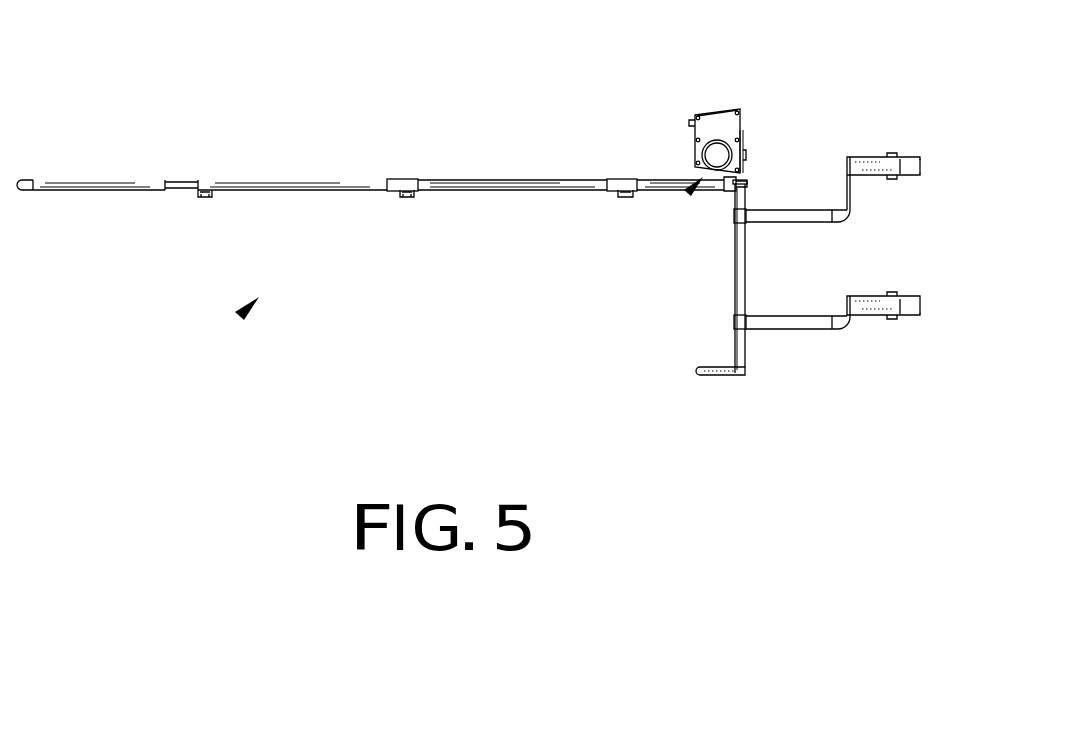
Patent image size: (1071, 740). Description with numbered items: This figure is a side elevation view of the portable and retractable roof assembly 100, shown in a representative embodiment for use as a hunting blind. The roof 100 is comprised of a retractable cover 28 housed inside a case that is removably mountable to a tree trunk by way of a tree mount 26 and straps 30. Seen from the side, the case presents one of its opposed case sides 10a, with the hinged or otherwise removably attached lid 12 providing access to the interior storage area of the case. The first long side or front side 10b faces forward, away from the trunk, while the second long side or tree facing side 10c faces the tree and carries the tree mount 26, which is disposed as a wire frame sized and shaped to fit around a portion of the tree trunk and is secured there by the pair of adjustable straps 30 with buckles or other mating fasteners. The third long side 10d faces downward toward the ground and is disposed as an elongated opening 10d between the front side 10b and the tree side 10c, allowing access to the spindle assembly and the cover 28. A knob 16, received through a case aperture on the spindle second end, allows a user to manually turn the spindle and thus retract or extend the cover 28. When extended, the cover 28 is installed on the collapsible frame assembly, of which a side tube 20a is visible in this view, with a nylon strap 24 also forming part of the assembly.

The portable and retractable roof assembly 100 is at (240, 316).
The case side 10a is at (723, 126).
The front side of case 10b is at (692, 141).
The tree facing side of case 10c is at (742, 137).
The elongated opening 10d is at (688, 193).
The lid 12 is at (713, 110).
The knob 16 is at (718, 168).
The side tube 20a is at (398, 191).
The nylon strap 24 is at (200, 196).
The tree mount 26 is at (743, 353).
The cover 28 is at (453, 181).
The strap 30 is at (845, 219).